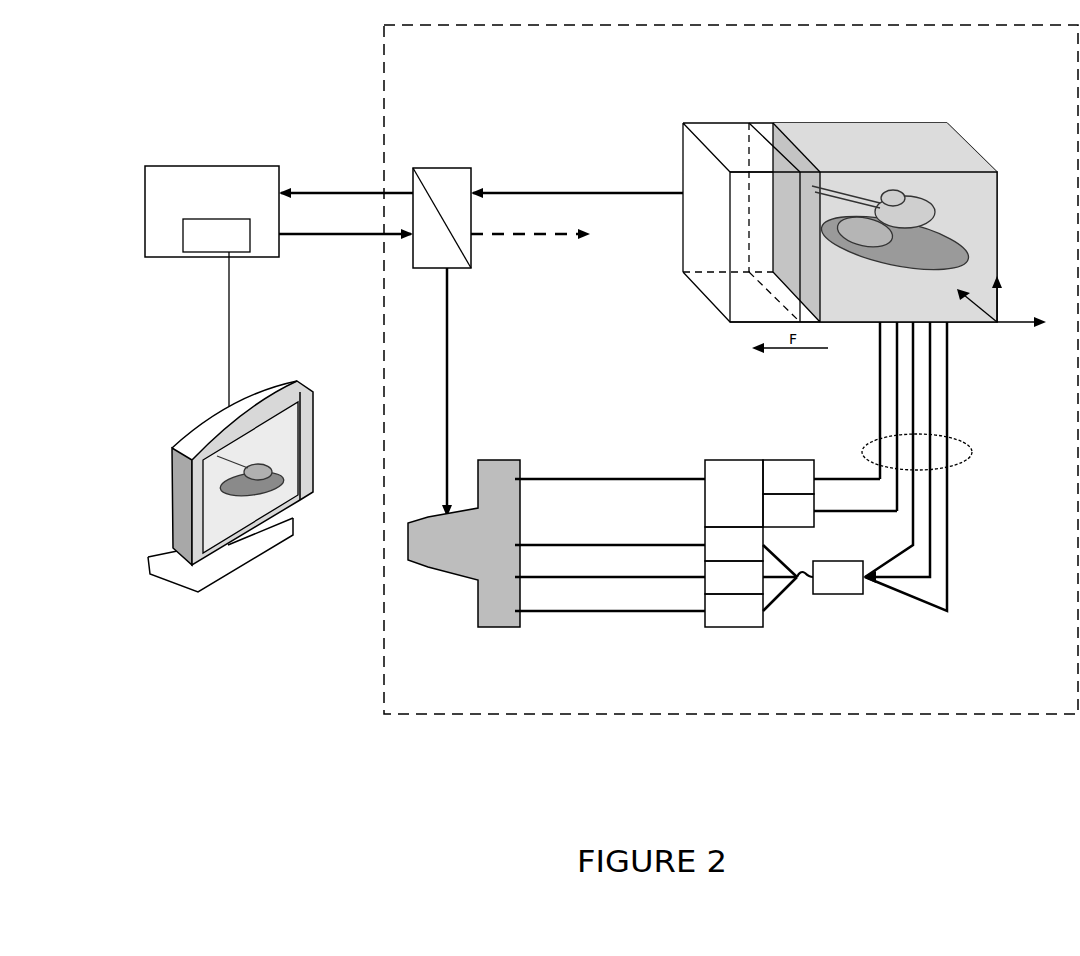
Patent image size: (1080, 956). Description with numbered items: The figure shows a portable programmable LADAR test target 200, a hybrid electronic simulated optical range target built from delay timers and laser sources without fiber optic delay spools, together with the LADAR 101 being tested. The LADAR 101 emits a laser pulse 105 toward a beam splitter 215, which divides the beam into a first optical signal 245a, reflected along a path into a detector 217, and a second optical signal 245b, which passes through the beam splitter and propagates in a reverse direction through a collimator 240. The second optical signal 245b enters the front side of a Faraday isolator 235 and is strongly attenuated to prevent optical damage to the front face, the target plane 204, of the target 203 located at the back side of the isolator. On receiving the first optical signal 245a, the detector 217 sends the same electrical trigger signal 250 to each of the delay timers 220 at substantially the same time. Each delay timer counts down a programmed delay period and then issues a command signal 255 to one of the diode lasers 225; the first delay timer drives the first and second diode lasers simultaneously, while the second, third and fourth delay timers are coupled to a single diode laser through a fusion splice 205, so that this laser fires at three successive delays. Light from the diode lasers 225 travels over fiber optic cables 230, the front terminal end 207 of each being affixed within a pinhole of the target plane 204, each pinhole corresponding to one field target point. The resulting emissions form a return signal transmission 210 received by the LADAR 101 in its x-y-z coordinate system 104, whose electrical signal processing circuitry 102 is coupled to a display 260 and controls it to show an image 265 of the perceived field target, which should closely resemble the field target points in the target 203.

The LADAR 101 is at (213, 166).
The electrical signal processing circuitry 102 is at (216, 235).
The x-y-z coordinate system 104 is at (1000, 325).
The laser pulse 105 is at (307, 235).
The portable programmable LADAR test target 200 is at (478, 716).
The target 203 is at (851, 123).
The target plane 204 is at (808, 165).
The fusion splice 205 is at (800, 590).
The front terminal end 207 is at (795, 158).
The return signal transmission 210 is at (323, 193).
The beam splitter 215 is at (438, 168).
The detector 217 is at (488, 460).
The delay timers 220 is at (705, 637).
The diode lasers 225 is at (763, 637).
The fiber optic cables 230 is at (960, 465).
The Faraday isolator 235 is at (759, 123).
The collimator 240 is at (712, 123).
The first optical signal 245a is at (448, 348).
The second optical signal 245b is at (532, 238).
The electrical trigger signal 250 is at (607, 612).
The command signal 255 is at (785, 560).
The display 260 is at (220, 588).
The image 265 is at (250, 505).